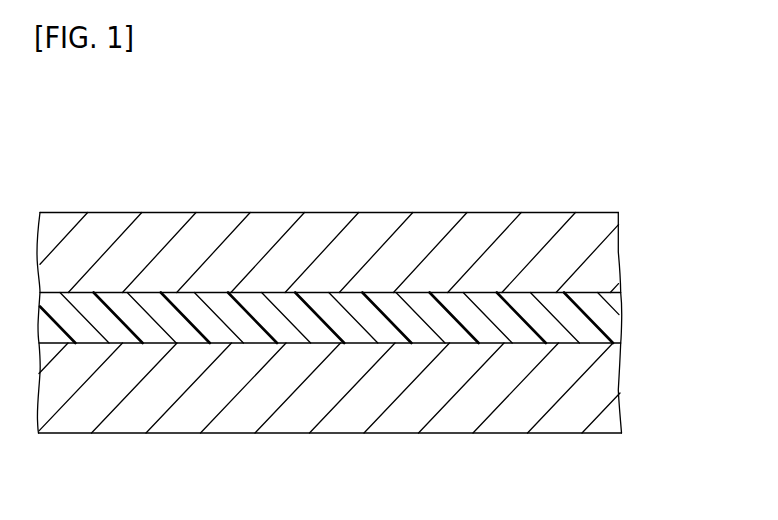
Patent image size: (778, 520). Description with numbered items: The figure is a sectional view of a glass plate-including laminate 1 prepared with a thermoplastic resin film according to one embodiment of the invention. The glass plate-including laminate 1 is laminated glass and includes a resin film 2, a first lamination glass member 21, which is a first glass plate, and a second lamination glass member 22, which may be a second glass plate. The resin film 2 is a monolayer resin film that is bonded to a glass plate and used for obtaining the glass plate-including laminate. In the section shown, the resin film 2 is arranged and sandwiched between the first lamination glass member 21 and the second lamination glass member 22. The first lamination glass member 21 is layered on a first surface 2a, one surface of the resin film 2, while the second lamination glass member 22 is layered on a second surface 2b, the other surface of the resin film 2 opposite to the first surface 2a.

The glass plate-including laminate 1 is at (117, 168).
The resin film 2 is at (620, 315).
The first surface 2a is at (442, 292).
The second surface 2b is at (440, 343).
The first lamination glass member 21 is at (619, 252).
The second lamination glass member 22 is at (619, 390).